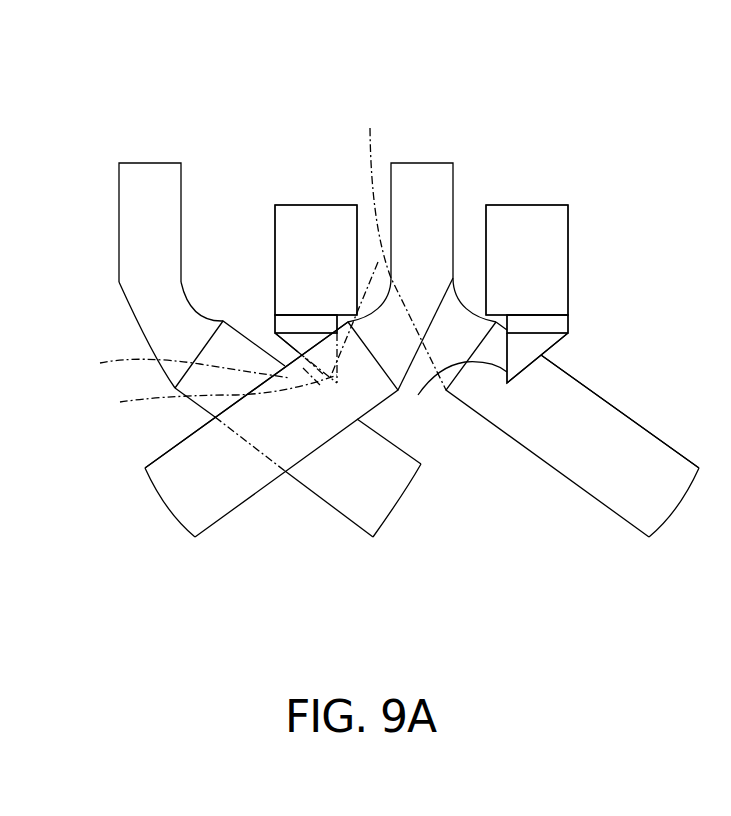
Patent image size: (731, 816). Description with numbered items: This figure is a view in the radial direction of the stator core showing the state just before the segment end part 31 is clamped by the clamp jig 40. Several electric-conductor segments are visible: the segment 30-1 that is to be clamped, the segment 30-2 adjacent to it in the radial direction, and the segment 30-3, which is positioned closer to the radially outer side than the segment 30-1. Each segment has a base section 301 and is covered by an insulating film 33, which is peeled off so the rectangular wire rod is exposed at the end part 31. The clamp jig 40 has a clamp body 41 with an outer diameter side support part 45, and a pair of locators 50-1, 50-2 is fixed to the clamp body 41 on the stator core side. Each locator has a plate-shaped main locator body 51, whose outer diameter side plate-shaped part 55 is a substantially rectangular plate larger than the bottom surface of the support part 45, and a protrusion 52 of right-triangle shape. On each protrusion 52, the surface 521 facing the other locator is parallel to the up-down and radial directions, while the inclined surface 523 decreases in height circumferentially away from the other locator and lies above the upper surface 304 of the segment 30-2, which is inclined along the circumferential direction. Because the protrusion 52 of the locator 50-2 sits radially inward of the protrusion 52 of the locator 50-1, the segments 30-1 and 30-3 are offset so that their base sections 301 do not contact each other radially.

The segment 30-1 is at (225, 541).
The segment 30-2 is at (128, 146).
The segment 30-3 is at (615, 541).
The segment end part 31 is at (119, 203).
The insulating film 33 is at (600, 473).
The clamp jig 40 is at (472, 209).
The clamp body 41 is at (618, 157).
The outer diameter side support part 45 is at (303, 263).
The locator 50-1 is at (187, 326).
The locator 50-2 is at (618, 340).
The main locator body 51 is at (258, 319).
The protrusion 52 is at (100, 363).
The outer diameter side plate-shaped part 55 is at (523, 330).
The base section 301 is at (537, 388).
The upper surface 304 is at (388, 247).
The surface 521 is at (453, 395).
The inclined surface 523 is at (120, 402).